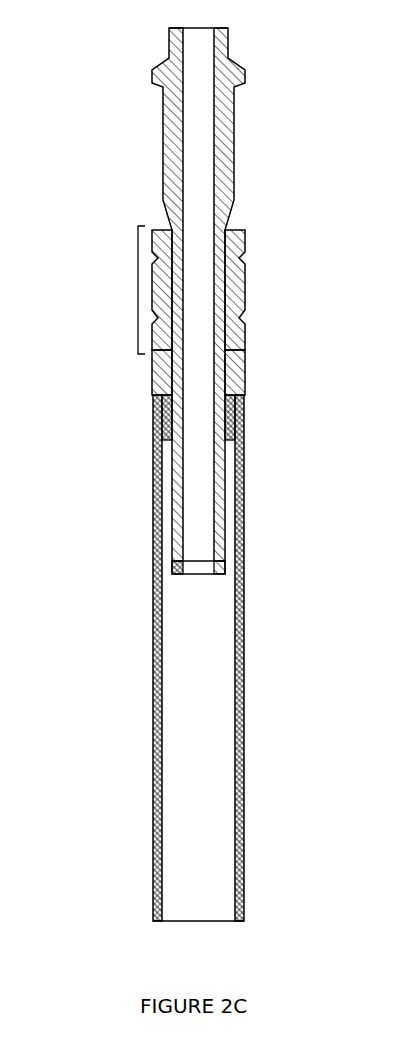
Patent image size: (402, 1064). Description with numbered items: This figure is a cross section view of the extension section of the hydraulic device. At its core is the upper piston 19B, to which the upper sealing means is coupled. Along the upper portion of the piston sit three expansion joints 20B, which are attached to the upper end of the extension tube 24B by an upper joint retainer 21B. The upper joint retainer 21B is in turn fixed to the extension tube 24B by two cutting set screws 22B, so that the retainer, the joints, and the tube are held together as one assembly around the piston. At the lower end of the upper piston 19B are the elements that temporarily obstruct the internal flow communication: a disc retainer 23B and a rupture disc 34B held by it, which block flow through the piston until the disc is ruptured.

The upper piston 19B is at (227, 63).
The expansion joints 20B is at (137, 290).
The upper joint retainer 21B is at (240, 357).
The cutting set screws 22B is at (170, 417).
The disc retainer 23B is at (175, 569).
The extension tube 24B is at (240, 673).
The rupture disc 34B is at (200, 561).